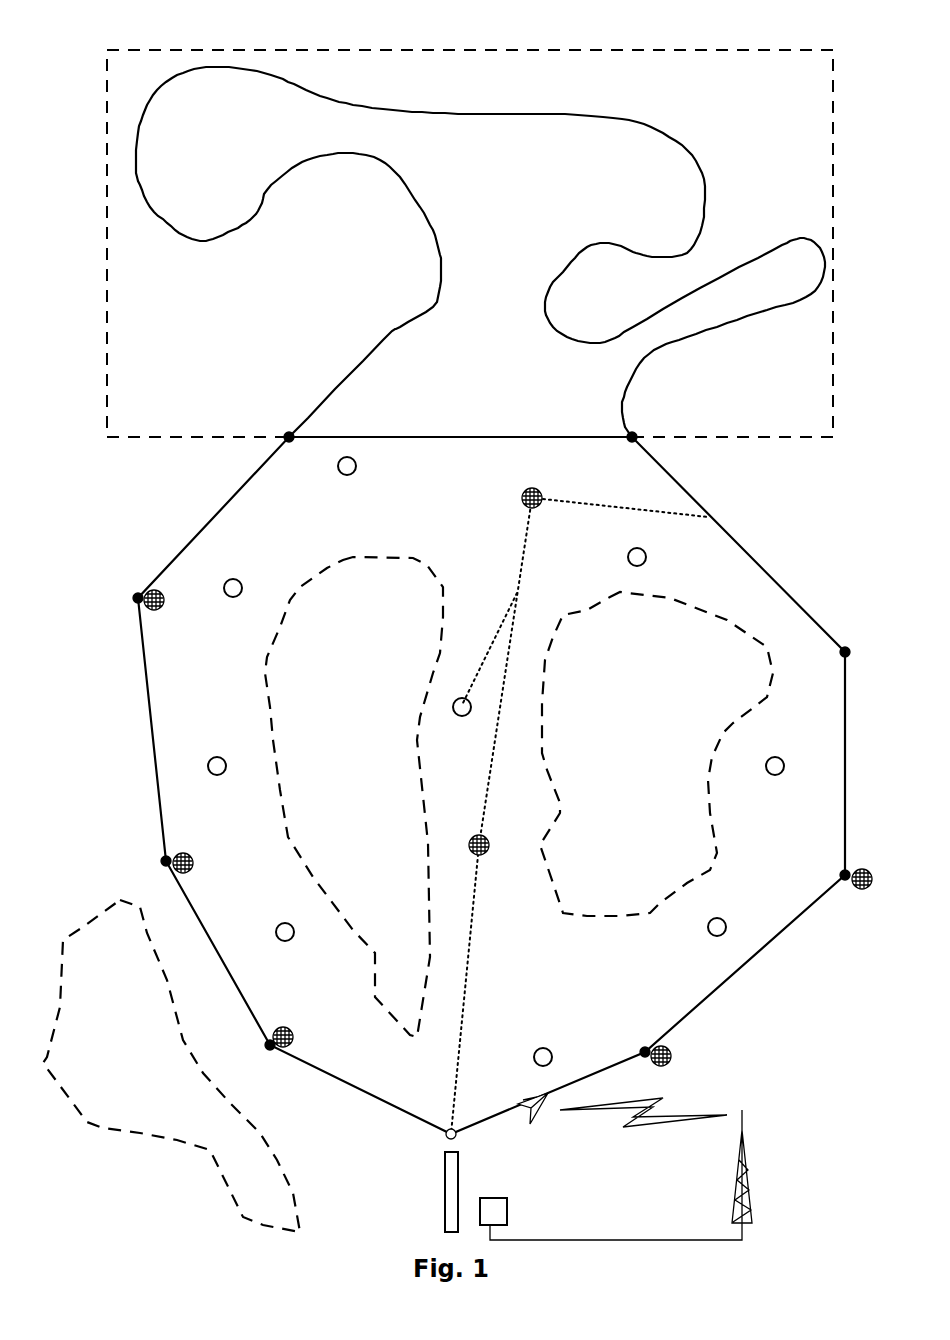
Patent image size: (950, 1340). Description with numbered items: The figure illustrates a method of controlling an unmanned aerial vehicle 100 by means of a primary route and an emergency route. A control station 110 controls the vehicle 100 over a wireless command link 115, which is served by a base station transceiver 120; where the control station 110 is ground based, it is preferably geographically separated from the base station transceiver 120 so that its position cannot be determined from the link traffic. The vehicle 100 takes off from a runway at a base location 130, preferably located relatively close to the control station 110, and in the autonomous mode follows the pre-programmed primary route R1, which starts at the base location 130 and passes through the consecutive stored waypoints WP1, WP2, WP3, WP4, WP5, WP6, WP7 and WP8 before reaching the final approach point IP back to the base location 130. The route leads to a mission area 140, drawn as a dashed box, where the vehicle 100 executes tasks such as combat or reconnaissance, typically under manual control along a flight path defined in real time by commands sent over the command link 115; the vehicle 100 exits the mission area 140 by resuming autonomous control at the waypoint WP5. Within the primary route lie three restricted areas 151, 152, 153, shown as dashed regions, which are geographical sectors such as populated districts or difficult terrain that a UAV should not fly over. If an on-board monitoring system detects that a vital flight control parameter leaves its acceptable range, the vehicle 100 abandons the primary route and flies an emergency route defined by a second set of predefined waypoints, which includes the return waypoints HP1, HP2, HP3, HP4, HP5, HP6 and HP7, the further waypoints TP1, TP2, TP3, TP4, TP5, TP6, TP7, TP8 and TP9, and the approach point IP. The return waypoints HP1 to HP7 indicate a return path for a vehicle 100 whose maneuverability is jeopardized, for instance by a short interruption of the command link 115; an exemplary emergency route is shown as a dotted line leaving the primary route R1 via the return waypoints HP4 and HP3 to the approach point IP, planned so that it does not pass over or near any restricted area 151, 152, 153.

The unmanned aerial vehicle 100 is at (542, 1118).
The control station 110 is at (507, 1212).
The wireless command link 115 is at (645, 1130).
The base station transceiver 120 is at (743, 1157).
The base location 130 is at (443, 1183).
The mission area 140 is at (737, 50).
The restricted area 151 is at (195, 1145).
The restricted area 152 is at (343, 560).
The restricted area 153 is at (590, 917).
The primary route R1 is at (747, 990).
The waypoint WP1 is at (623, 1037).
The waypoint WP2 is at (815, 870).
The waypoint WP3 is at (870, 640).
The waypoint WP4 is at (672, 451).
The waypoint WP5 is at (265, 422).
The waypoint WP6 is at (109, 590).
The waypoint WP7 is at (139, 876).
The waypoint WP8 is at (245, 1059).
The final approach point IP is at (440, 1115).
The return waypoint HP1 is at (685, 1068).
The return waypoint HP2 is at (862, 897).
The return waypoint HP3 is at (504, 855).
The return waypoint HP4 is at (507, 512).
The return waypoint HP5 is at (172, 618).
The return waypoint HP6 is at (210, 858).
The return waypoint HP7 is at (309, 1027).
The predefined waypoint TP1 is at (544, 1042).
The predefined waypoint TP2 is at (718, 912).
The predefined waypoint TP3 is at (771, 784).
The predefined waypoint TP4 is at (664, 564).
The predefined waypoint TP5 is at (373, 473).
The predefined waypoint TP6 is at (236, 606).
The predefined waypoint TP7 is at (231, 784).
The predefined waypoint TP8 is at (310, 943).
The predefined waypoint TP9 is at (451, 724).